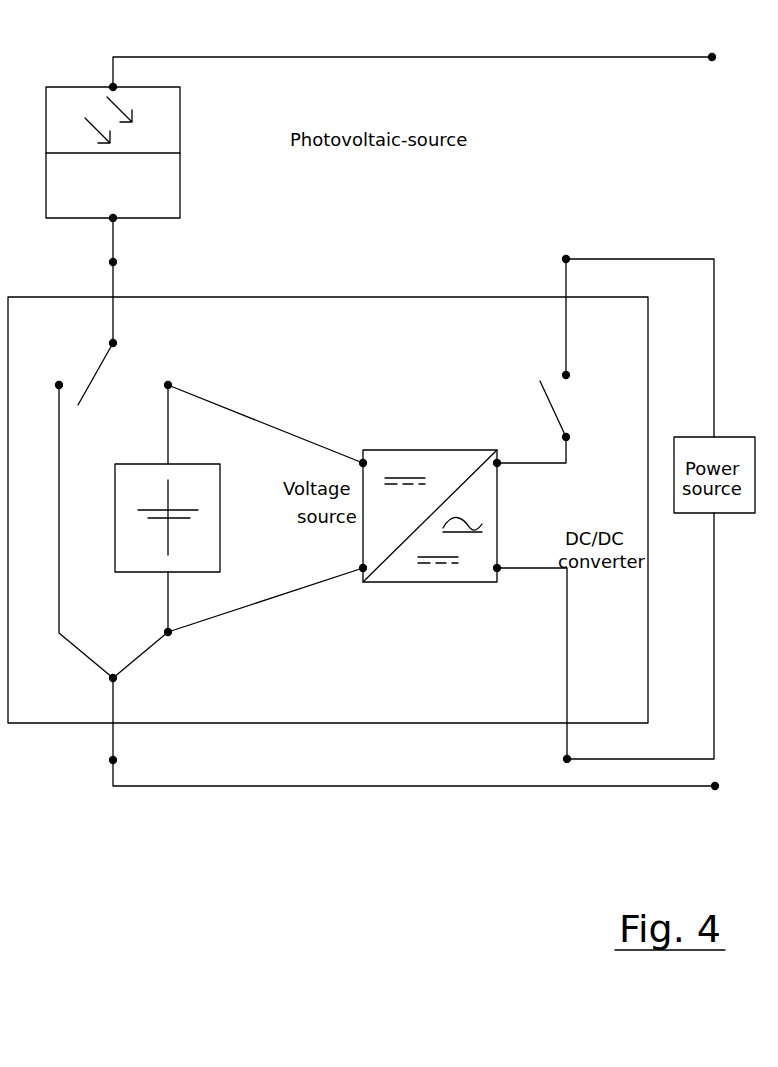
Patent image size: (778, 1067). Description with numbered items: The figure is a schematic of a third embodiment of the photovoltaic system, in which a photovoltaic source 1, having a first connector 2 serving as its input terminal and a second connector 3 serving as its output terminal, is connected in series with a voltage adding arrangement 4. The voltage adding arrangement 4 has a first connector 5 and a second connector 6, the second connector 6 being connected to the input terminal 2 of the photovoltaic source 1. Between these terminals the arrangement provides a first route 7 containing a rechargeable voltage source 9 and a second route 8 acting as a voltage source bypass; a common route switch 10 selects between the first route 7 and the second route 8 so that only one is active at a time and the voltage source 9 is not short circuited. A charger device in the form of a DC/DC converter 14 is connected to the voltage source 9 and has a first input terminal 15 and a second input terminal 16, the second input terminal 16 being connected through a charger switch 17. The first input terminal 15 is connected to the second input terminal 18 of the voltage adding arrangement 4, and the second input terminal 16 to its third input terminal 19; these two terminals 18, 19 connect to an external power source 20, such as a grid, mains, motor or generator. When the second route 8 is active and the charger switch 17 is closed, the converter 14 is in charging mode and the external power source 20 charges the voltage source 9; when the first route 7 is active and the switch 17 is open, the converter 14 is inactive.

The photovoltaic source 1 is at (165, 132).
The first connector (input terminal) 2 is at (100, 222).
The second connector (output terminal) 3 is at (112, 88).
The voltage adding arrangement 4 is at (304, 322).
The first connector (first input terminal) of the voltage adding arrangement 5 is at (110, 760).
The second connector (output terminal) of the voltage adding arrangement 6 is at (118, 262).
The first route 7 is at (170, 433).
The second route 8 is at (60, 602).
The voltage source 9 is at (222, 518).
The common route switch 10 is at (103, 368).
The DC/DC converter (charger device) 14 is at (500, 518).
The first input terminal of the charger device 15 is at (500, 572).
The second input terminal of the charger device 16 is at (500, 460).
The charger switch 17 is at (555, 408).
The second input terminal of the voltage adding arrangement 18 is at (565, 759).
The third input terminal of the voltage adding arrangement 19 is at (566, 259).
The external power source 20 is at (739, 446).